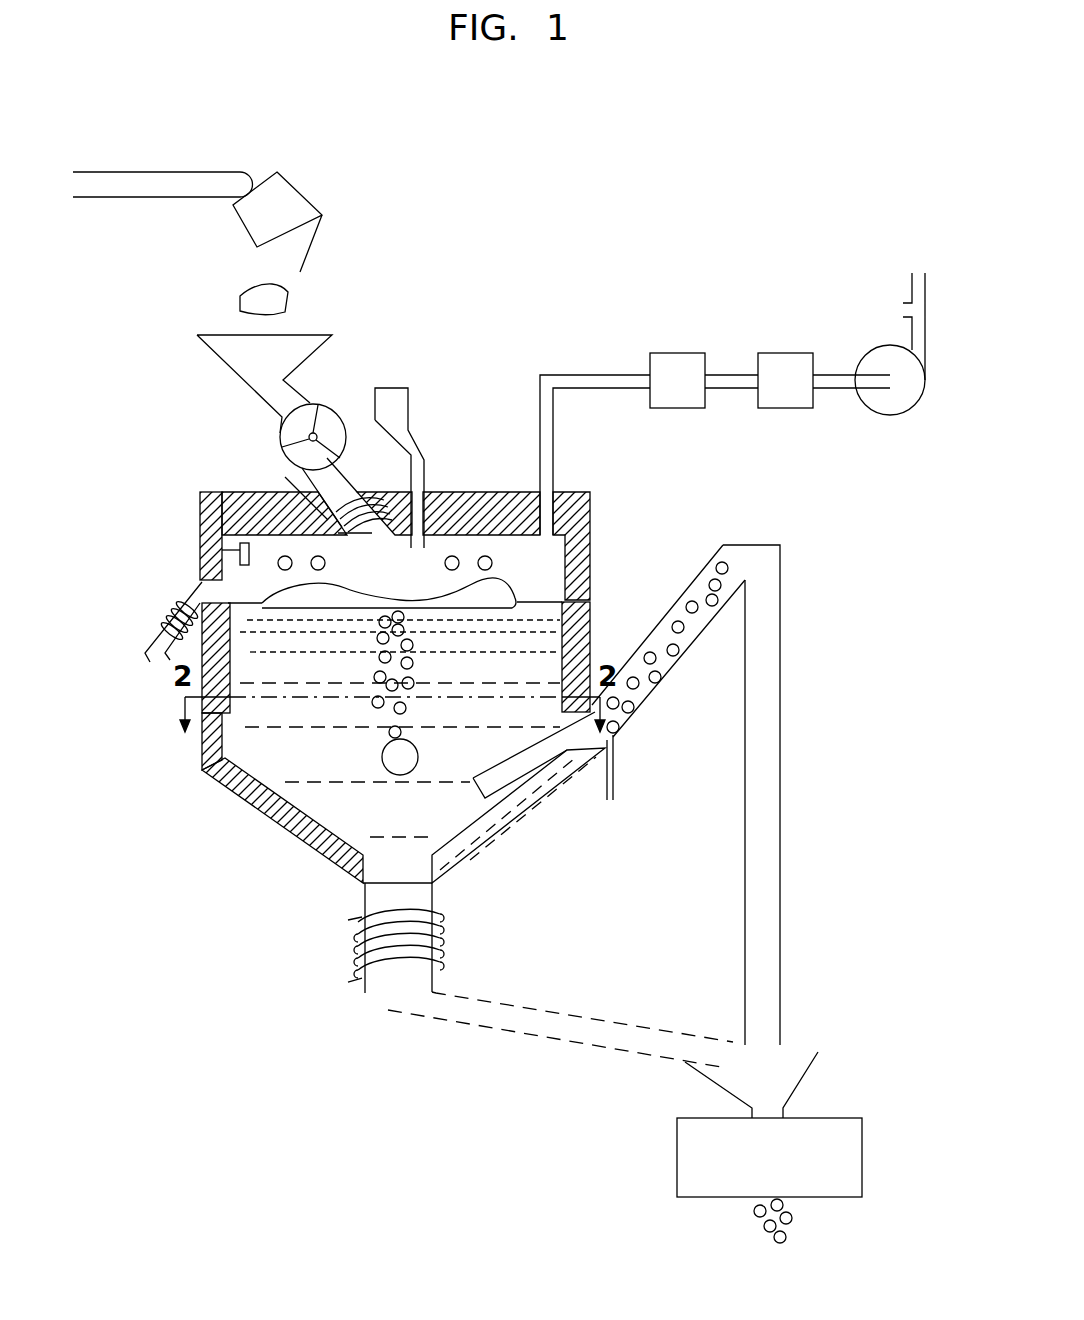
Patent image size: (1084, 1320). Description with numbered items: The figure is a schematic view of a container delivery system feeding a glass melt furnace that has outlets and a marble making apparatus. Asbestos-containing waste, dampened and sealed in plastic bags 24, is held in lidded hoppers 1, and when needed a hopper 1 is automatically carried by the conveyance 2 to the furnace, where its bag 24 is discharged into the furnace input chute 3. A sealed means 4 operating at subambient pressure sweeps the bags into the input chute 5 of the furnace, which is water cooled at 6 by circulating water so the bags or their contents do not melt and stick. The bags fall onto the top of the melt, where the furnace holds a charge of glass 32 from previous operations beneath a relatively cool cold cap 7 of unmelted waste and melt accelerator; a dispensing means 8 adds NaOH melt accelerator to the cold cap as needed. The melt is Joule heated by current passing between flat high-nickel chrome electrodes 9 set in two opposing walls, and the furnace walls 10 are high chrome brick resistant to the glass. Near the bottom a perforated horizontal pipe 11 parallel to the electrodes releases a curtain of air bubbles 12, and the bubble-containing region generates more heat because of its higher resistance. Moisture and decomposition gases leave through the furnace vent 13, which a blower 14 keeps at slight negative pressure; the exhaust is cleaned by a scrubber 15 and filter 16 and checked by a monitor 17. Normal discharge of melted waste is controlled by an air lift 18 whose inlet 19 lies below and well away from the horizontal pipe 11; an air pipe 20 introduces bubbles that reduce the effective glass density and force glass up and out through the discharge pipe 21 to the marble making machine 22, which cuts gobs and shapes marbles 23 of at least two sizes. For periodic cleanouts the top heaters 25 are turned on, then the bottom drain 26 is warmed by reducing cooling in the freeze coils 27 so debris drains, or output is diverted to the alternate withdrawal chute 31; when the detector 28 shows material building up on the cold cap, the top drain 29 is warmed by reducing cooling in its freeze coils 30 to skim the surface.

The hopper 1 is at (307, 192).
The conveyance 2 is at (170, 172).
The furnace input chute 3 is at (222, 355).
The sealed means 4 is at (282, 438).
The input chute of the furnace 5 is at (340, 479).
The water cooling 6 is at (288, 485).
The cold cap 7 is at (355, 600).
The dispensing means 8 is at (413, 440).
The electrodes 9 is at (223, 665).
The furnace walls 10 is at (590, 515).
The horizontal pipe 11 is at (419, 756).
The air bubbles 12 is at (413, 667).
The furnace vent 13 is at (554, 455).
The blower 14 is at (886, 415).
The scrubber 15 is at (678, 353).
The filter 16 is at (764, 353).
The monitor 17 is at (902, 312).
The air lift 18 is at (668, 672).
The inlet of the air lift 19 is at (475, 798).
The air pipe 20 is at (615, 777).
The discharge pipe 21 is at (782, 848).
The marble making machine 22 is at (677, 1145).
The marbles 23 is at (762, 1226).
The plastic bag 24 is at (242, 295).
The top heaters 25 is at (547, 553).
The bottom drain 26 is at (363, 891).
The freeze coils 27 is at (444, 940).
The detector 28 is at (215, 547).
The top drain 29 is at (152, 660).
The freeze coils 30 is at (178, 607).
The alternate withdrawal chute 31 is at (555, 1040).
The charge of glass 32 is at (317, 808).